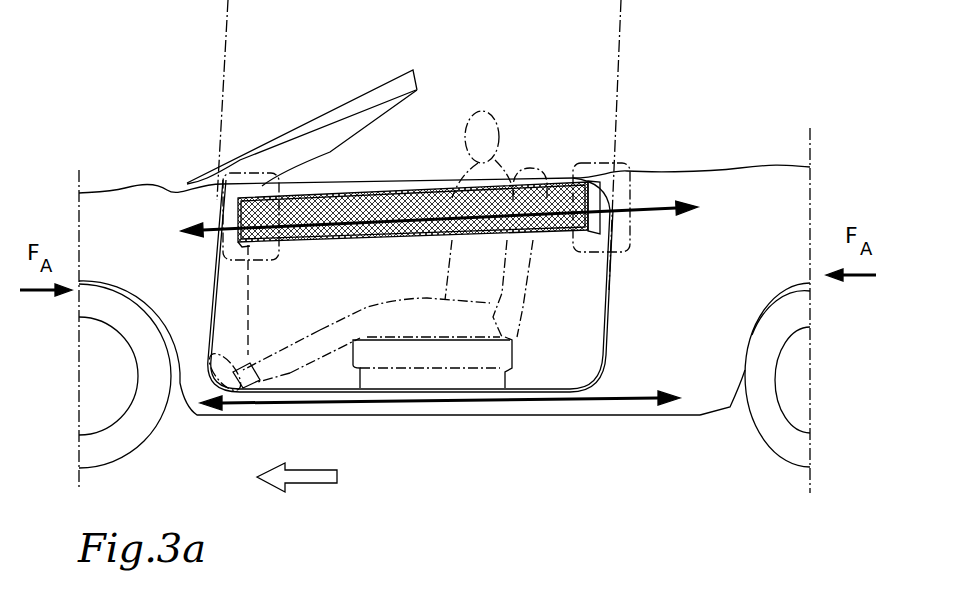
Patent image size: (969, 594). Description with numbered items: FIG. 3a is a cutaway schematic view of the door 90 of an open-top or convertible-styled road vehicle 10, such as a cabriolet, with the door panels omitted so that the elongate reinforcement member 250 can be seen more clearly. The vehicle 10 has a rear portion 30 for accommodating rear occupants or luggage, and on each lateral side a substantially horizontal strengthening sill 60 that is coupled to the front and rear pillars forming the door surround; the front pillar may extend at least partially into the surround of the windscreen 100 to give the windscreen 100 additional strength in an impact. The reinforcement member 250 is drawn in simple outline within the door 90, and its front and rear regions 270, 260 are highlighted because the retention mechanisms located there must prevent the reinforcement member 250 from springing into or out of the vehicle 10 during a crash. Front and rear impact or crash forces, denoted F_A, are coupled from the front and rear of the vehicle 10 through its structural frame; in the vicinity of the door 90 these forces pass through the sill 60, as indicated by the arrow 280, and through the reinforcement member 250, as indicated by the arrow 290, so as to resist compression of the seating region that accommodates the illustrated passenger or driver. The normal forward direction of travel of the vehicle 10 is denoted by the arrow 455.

The vehicle 10 is at (131, 43).
The rear portion 30 is at (758, 220).
The strengthening sill 60 is at (448, 408).
The door 90 is at (370, 172).
The windscreen 100 is at (315, 117).
The reinforcement member 250 is at (297, 243).
The rear region 260 is at (622, 170).
The front region 270 is at (296, 196).
The arrow 280 is at (607, 393).
The arrow 290 is at (655, 212).
The arrow 455 is at (308, 478).